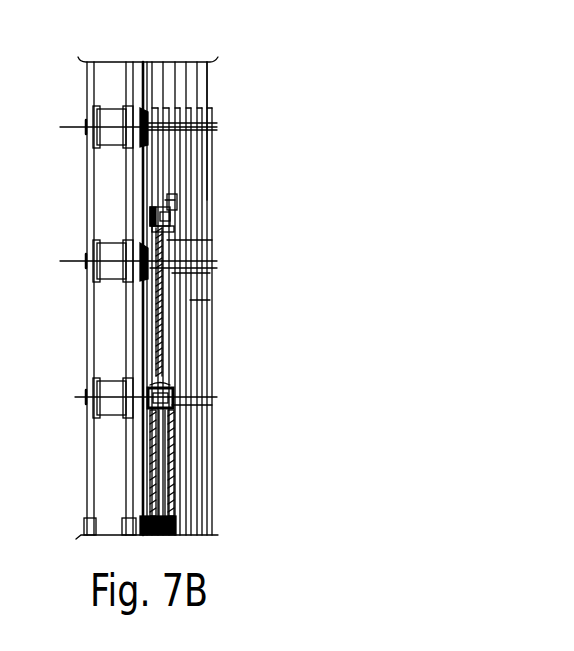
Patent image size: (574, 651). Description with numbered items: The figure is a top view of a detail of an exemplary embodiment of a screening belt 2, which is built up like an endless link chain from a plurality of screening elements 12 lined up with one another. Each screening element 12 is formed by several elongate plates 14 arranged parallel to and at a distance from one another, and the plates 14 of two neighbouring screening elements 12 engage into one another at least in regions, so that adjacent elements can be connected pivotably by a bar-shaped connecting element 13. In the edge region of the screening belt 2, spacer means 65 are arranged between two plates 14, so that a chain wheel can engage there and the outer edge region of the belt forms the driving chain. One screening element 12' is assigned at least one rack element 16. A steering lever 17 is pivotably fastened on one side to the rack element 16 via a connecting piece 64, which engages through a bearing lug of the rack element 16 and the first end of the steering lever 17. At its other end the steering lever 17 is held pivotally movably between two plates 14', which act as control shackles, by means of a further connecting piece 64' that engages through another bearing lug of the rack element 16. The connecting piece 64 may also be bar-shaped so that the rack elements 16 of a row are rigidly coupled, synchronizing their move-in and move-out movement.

The screening belt 2 is at (250, 72).
The screening element 12 is at (252, 298).
The screening element 12' is at (278, 131).
The bar-shaped connecting element 13 is at (60, 127).
The elongate plate 14 is at (249, 238).
The plate (control shackle) 14' is at (225, 463).
The rack element 16 is at (174, 238).
The steering lever 17 is at (154, 330).
The connecting piece 64 is at (243, 150).
The further connecting piece 64' is at (241, 375).
The spacer means 65 is at (108, 108).